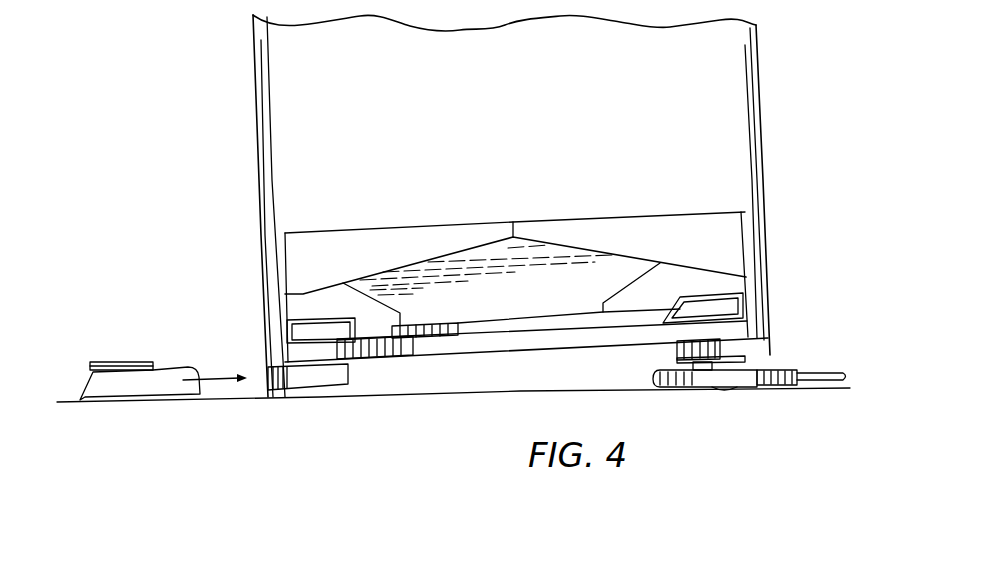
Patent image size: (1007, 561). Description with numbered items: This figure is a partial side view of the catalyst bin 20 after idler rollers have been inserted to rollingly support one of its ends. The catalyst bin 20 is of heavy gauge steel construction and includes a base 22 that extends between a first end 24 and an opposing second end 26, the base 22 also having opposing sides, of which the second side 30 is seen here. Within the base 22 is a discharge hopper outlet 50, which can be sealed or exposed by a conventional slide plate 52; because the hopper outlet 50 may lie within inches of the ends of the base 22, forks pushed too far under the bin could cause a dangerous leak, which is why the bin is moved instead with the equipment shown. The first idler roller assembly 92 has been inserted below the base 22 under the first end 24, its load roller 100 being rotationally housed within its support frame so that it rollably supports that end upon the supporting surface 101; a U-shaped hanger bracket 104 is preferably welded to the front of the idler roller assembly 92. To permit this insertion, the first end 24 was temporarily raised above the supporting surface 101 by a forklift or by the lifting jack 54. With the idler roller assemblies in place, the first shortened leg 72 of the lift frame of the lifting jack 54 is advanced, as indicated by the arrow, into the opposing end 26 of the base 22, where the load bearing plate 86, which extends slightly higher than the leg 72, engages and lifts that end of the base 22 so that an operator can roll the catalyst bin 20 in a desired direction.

The catalyst bin 20 is at (778, 118).
The base 22 is at (428, 369).
The first end 24 is at (770, 325).
The second end 26 is at (267, 361).
The second side 30 is at (527, 340).
The discharge hopper outlet 50 is at (665, 305).
The slide plate 52 is at (467, 332).
The lifting jack 54 is at (153, 345).
The first shortened leg 72 is at (160, 382).
The load bearing plate 86 is at (115, 360).
The first idler roller assembly 92 is at (791, 349).
The load roller 100 is at (722, 388).
The supporting surface 101 is at (527, 399).
The U-shaped hanger bracket 104 is at (840, 380).